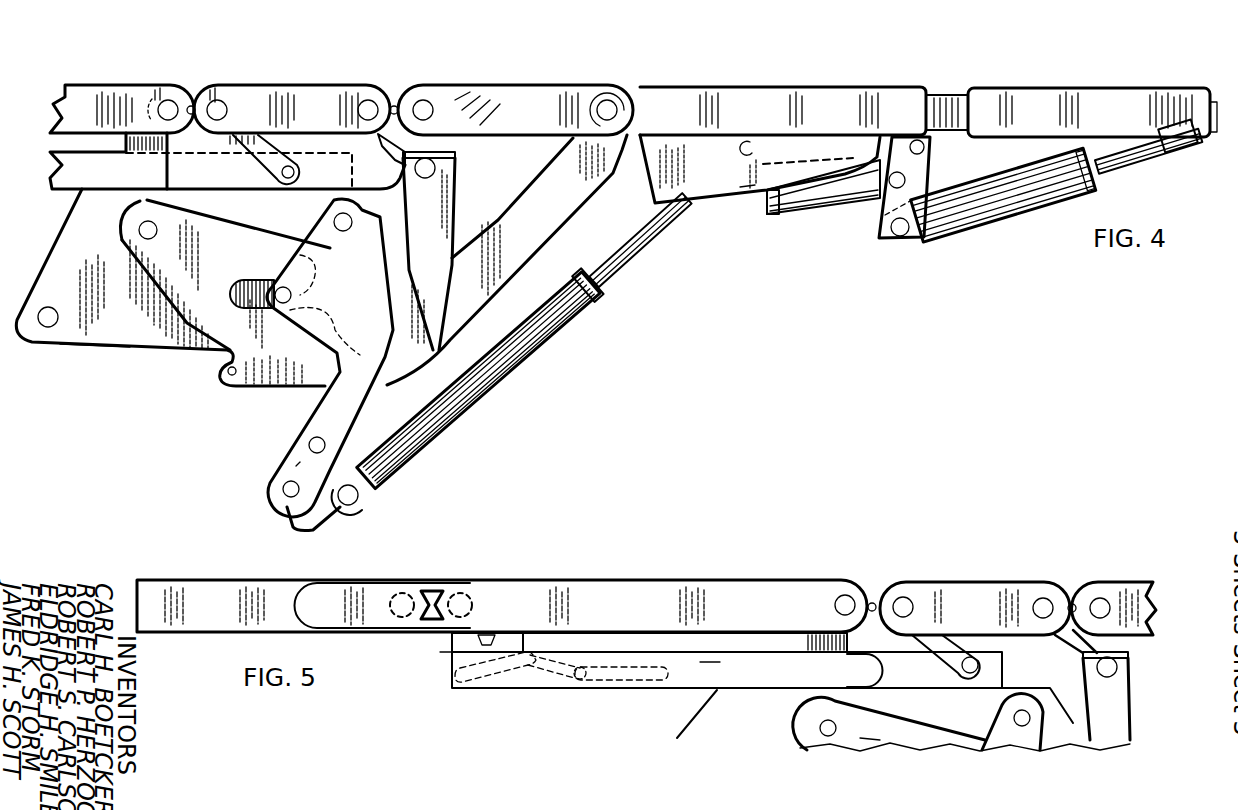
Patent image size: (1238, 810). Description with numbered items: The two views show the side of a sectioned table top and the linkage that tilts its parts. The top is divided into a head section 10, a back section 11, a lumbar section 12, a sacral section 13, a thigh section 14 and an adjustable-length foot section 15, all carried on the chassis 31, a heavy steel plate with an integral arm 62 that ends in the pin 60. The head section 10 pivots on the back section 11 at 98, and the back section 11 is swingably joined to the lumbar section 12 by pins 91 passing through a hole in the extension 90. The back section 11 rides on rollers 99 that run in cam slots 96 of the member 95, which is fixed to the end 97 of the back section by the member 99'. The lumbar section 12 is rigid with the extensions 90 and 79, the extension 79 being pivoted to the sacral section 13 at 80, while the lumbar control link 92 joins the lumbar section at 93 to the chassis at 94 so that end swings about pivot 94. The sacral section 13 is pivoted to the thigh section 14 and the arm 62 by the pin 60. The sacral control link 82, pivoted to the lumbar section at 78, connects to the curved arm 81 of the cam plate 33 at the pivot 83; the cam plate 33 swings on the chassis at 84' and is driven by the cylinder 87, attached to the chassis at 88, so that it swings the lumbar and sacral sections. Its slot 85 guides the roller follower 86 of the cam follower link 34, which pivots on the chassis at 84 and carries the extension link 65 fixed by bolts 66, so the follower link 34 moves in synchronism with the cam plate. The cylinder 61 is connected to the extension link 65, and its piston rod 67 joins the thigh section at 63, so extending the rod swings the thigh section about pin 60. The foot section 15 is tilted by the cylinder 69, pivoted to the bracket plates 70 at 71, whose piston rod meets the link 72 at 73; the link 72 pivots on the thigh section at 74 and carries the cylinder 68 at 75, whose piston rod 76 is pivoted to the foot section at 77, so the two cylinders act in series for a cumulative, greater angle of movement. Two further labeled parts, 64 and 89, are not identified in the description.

In FIG. 5, the head section 10 is at (362, 590).
In FIG. 4, the back section 11 is at (108, 88).
In FIG. 5, the back section 11 is at (650, 580).
In FIG. 4, the lumbar section 12 is at (318, 88).
In FIG. 5, the lumbar section 12 is at (930, 582).
In FIG. 4, the sacral section 13 is at (517, 95).
In FIG. 5, the sacral section 13 is at (1150, 582).
In FIG. 4, the thigh section 14 is at (715, 95).
In FIG. 4, the foot section 15 is at (1125, 98).
In FIG. 4, the chassis 31 is at (132, 326).
In FIG. 4, the cam plate 33 is at (268, 392).
In FIG. 5, the cam plate 33 is at (889, 723).
In FIG. 4, the cam follower link 34 is at (300, 463).
In FIG. 5, the cam follower link 34 is at (998, 730).
In FIG. 4, the pin 60 is at (607, 100).
In FIG. 4, the cylinder 61 is at (575, 318).
In FIG. 4, the arm 62 is at (537, 205).
In FIG. 4, the pivot 63 is at (745, 153).
In FIG. 4, the pivot pin 64 is at (353, 503).
In FIG. 4, the extension link 65 is at (300, 531).
In FIG. 4, the bolts 66 is at (317, 453).
In FIG. 4, the piston rod 67 is at (660, 243).
In FIG. 4, the cylinder 68 is at (979, 224).
In FIG. 4, the cylinder 69 is at (823, 212).
In FIG. 4, the bracket plates 70 is at (747, 190).
In FIG. 4, the pivot 71 is at (773, 218).
In FIG. 4, the link 72 is at (887, 212).
In FIG. 4, the pivot 73 is at (906, 180).
In FIG. 4, the pivot 74 is at (925, 147).
In FIG. 4, the pivot 75 is at (900, 238).
In FIG. 4, the piston rod 76 is at (1125, 178).
In FIG. 4, the pivot 77 is at (1183, 145).
In FIG. 4, the pivot 78 is at (365, 100).
In FIG. 5, the pivot 78 is at (1044, 598).
In FIG. 4, the extension 79 is at (394, 104).
In FIG. 5, the extension 79 is at (1073, 602).
In FIG. 4, the pivot 80 is at (423, 100).
In FIG. 5, the pivot 80 is at (1101, 598).
In FIG. 4, the arm 81 is at (443, 212).
In FIG. 5, the arm 81 is at (1132, 704).
In FIG. 4, the sacral control link 82 is at (391, 150).
In FIG. 5, the sacral control link 82 is at (1066, 648).
In FIG. 4, the pivot 83 is at (418, 176).
In FIG. 5, the pivot 83 is at (1118, 668).
In FIG. 4, the pivot 84 is at (236, 273).
In FIG. 5, the pivot 84 is at (895, 730).
In FIG. 4, the pivot 84' is at (119, 219).
In FIG. 4, the slot 85 is at (230, 310).
In FIG. 4, the roller follower 86 is at (292, 292).
In FIG. 4, the cylinder 87 is at (110, 355).
In FIG. 4, the pivot 88 is at (48, 330).
In FIG. 4, the pin hole 89 is at (232, 378).
In FIG. 4, the extension 90 is at (196, 98).
In FIG. 5, the extension 90 is at (872, 602).
In FIG. 4, the pins 91 is at (174, 94).
In FIG. 5, the pins 91 is at (845, 594).
In FIG. 4, the lumbar control link 92 is at (265, 140).
In FIG. 5, the lumbar control link 92 is at (944, 657).
In FIG. 4, the pivot 93 is at (222, 100).
In FIG. 5, the pivot 93 is at (903, 597).
In FIG. 4, the pivot 94 is at (296, 172).
In FIG. 5, the pivot 94 is at (980, 664).
In FIG. 5, the member 95 is at (530, 680).
In FIG. 5, the cam slots 96 is at (478, 680).
In FIG. 5, the end of back section 97 is at (440, 590).
In FIG. 5, the pivot 98 is at (402, 618).
In FIG. 5, the rollers 99 is at (621, 698).
In FIG. 5, the member 99' is at (430, 673).